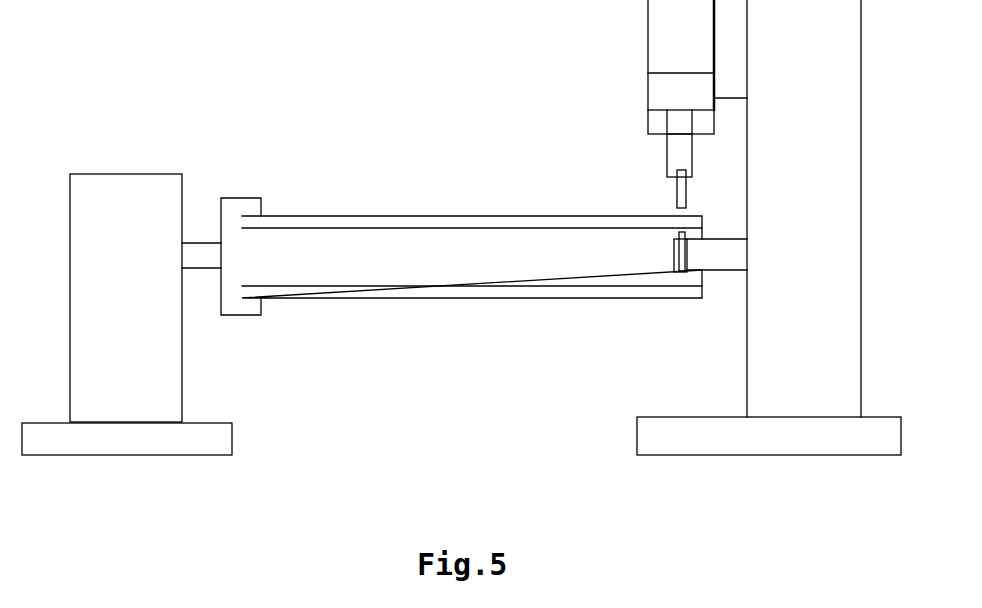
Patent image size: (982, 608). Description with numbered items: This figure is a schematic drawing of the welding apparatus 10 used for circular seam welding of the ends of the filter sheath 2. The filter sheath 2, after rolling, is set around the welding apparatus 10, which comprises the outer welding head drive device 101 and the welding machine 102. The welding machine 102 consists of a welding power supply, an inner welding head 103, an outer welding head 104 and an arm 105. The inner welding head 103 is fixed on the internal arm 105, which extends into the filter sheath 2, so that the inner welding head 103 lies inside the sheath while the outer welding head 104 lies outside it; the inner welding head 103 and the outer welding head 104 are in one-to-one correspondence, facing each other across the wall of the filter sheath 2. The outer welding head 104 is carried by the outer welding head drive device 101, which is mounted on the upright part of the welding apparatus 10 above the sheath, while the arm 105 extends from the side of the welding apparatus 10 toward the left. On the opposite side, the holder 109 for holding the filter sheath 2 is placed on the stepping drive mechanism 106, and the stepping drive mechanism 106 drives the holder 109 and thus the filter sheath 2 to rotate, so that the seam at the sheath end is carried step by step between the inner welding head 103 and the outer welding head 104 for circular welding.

The filter sheath 2 is at (330, 220).
The welding apparatus 10 is at (832, 195).
The outer welding head drive device 101 is at (660, 90).
The welding machine 102 is at (763, 398).
The inner welding head 103 is at (679, 238).
The outer welding head 104 is at (683, 193).
The arm 105 is at (712, 258).
The stepping drive mechanism 106 is at (154, 325).
The holder 109 is at (233, 208).